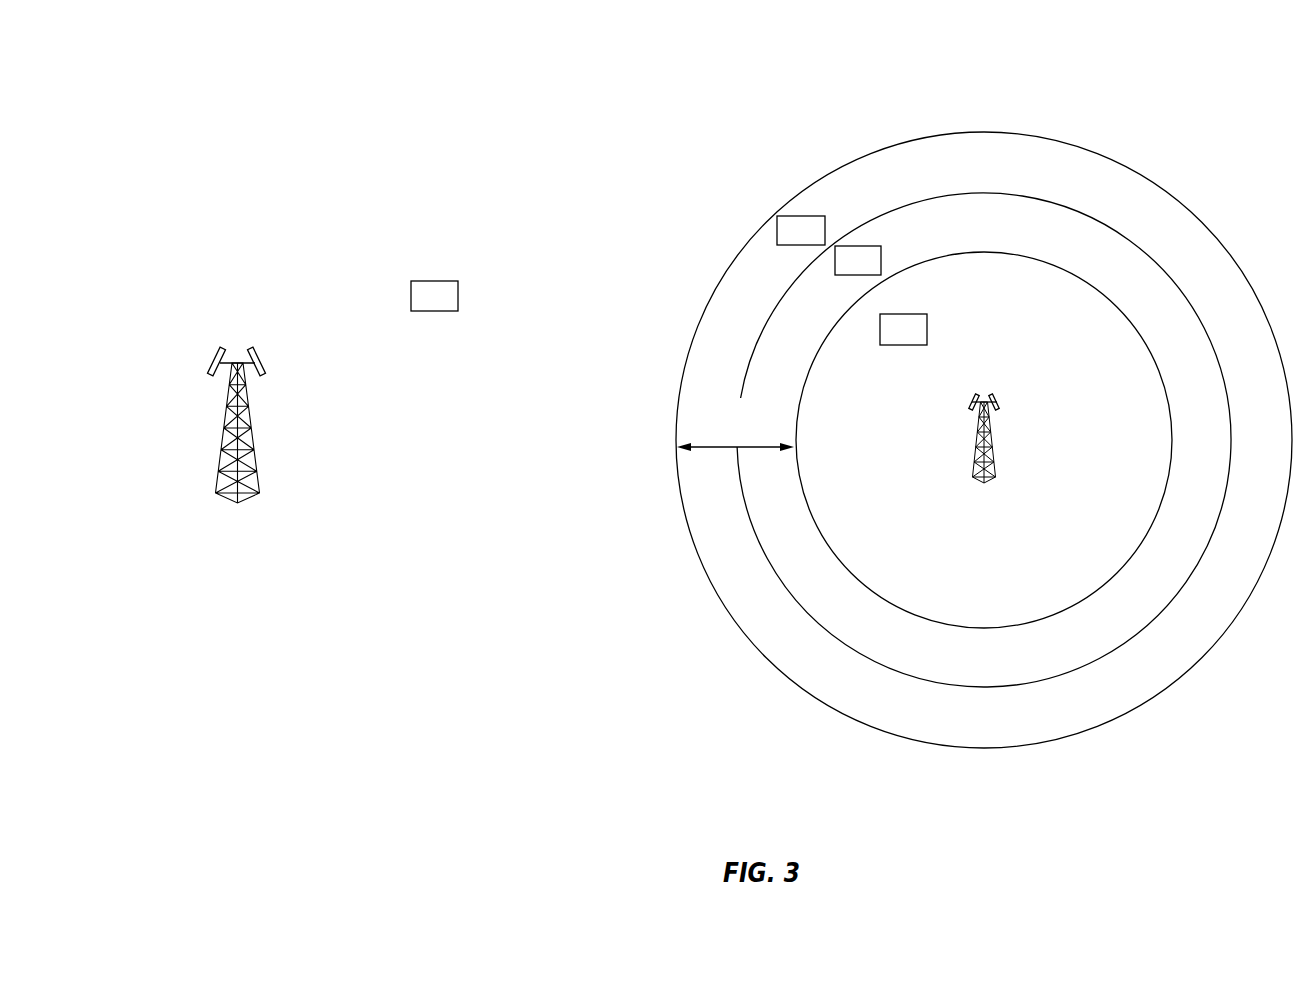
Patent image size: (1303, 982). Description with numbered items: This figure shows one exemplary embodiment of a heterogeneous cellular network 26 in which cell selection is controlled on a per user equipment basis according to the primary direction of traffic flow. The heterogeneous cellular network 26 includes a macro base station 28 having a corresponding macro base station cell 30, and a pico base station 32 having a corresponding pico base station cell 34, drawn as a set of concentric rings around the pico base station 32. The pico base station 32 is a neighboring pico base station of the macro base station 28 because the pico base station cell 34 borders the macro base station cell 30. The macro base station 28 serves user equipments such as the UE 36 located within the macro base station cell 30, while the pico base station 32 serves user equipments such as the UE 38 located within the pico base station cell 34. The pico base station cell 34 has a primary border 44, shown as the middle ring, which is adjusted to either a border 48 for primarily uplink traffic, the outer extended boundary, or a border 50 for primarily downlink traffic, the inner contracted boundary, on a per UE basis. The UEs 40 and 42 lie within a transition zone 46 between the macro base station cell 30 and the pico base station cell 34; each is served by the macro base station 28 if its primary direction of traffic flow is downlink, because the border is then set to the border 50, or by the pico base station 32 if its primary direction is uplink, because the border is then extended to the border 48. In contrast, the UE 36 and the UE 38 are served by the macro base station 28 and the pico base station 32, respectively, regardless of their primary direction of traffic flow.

The heterogeneous cellular network 26 is at (722, 102).
The macro base station 28 is at (238, 363).
The macro base station cell 30 is at (481, 450).
The pico base station 32 is at (984, 401).
The pico base station cell 34 is at (1006, 573).
The user equipment 36 is at (441, 281).
The user equipment 38 is at (926, 328).
The user equipment 40 is at (781, 216).
The user equipment 42 is at (840, 246).
The primary border 44 is at (772, 573).
The transition zone 46 is at (735, 426).
The border for primarily uplink traffic 48 is at (900, 740).
The border for primarily downlink traffic 50 is at (868, 592).